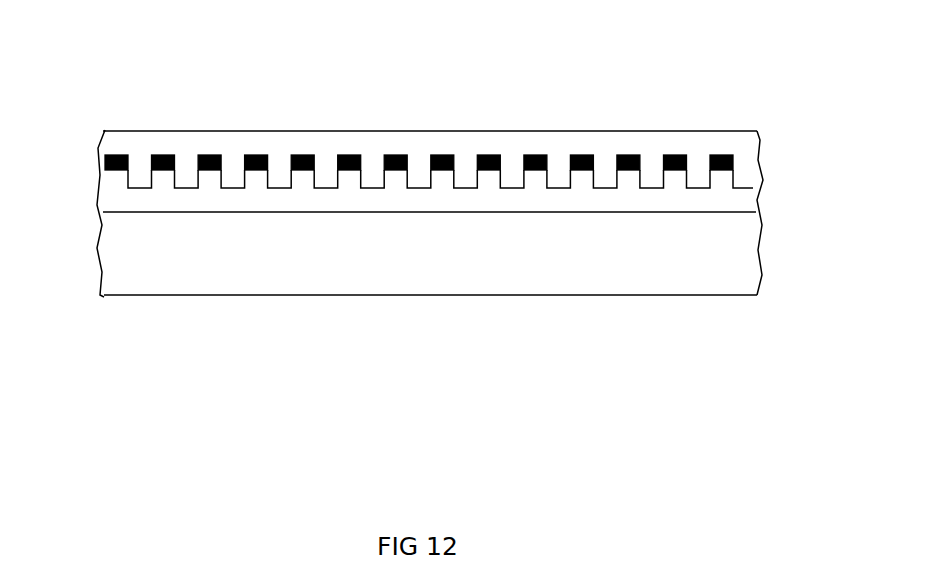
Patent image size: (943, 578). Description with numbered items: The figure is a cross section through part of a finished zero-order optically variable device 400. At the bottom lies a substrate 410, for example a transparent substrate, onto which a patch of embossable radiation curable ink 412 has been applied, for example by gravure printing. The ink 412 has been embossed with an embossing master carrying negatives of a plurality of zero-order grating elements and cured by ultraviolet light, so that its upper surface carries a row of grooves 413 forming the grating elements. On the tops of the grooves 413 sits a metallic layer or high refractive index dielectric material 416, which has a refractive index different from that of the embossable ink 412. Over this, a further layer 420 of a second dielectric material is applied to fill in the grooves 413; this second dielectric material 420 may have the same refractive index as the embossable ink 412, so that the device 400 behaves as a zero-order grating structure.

The optically variable device 400 is at (547, 320).
The substrate 410 is at (741, 297).
The embossable radiation curable ink 412 is at (745, 198).
The grooves 413 is at (115, 180).
The metallic layer or high refractive index dielectric material 416 is at (118, 154).
The further layer of second dielectric material 420 is at (710, 131).